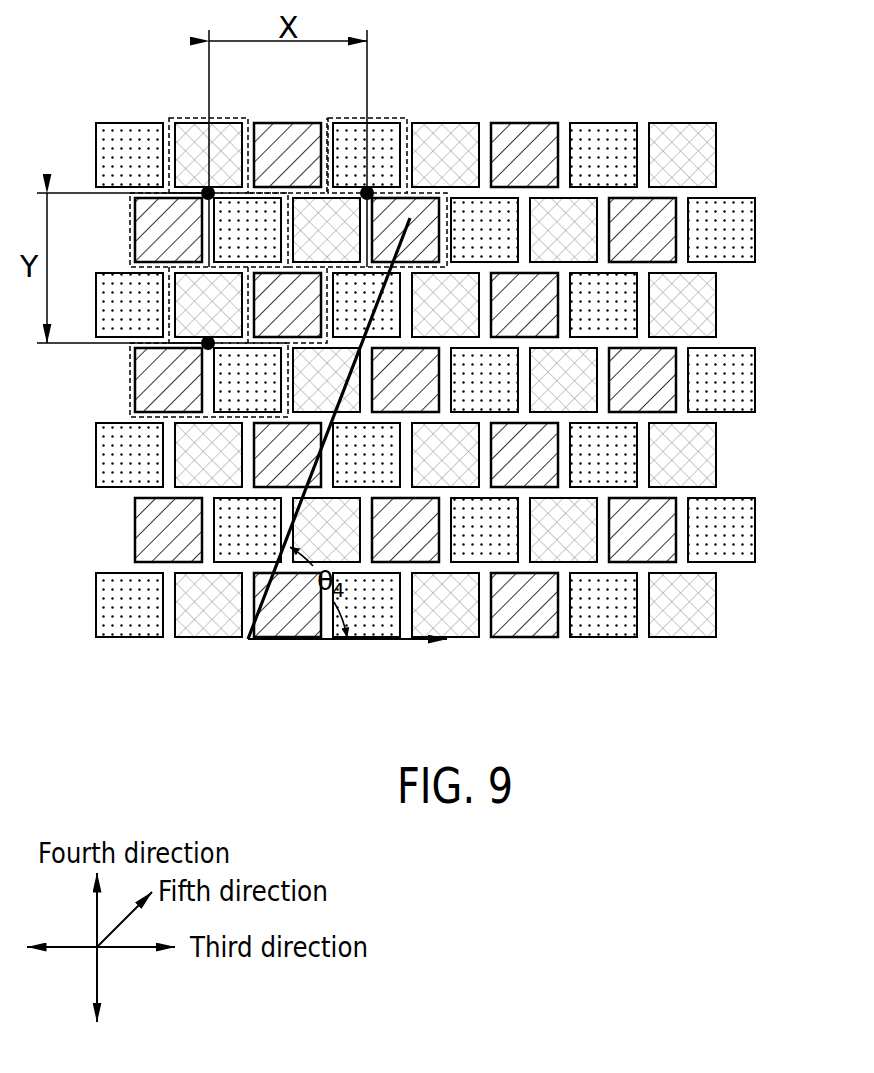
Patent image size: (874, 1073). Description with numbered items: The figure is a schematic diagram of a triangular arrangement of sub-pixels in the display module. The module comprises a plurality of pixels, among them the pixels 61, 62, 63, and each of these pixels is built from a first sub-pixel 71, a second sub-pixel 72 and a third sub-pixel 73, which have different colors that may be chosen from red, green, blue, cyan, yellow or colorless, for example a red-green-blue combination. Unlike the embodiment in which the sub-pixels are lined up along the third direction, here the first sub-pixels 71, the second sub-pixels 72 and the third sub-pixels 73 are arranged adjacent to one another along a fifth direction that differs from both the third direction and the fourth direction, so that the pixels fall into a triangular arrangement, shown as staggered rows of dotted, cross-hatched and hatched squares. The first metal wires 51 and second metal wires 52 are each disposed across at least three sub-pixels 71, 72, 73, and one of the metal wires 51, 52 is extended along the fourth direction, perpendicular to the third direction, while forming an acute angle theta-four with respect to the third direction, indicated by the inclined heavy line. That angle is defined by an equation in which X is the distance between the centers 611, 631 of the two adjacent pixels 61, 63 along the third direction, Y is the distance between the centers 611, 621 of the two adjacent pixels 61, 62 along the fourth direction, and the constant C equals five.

The first sub-pixel 71 is at (120, 118).
The second sub-pixel 72 is at (184, 118).
The third sub-pixel 73 is at (273, 118).
The pixel 63 is at (386, 118).
The center of pixel 63 631 is at (366, 189).
The first metal wire 51 is at (388, 159).
The second metal wire 52 is at (443, 213).
The pixel 61 is at (130, 232).
The center of pixel 61 611 is at (205, 192).
The pixel 62 is at (130, 400).
The center of pixel 62 621 is at (205, 344).